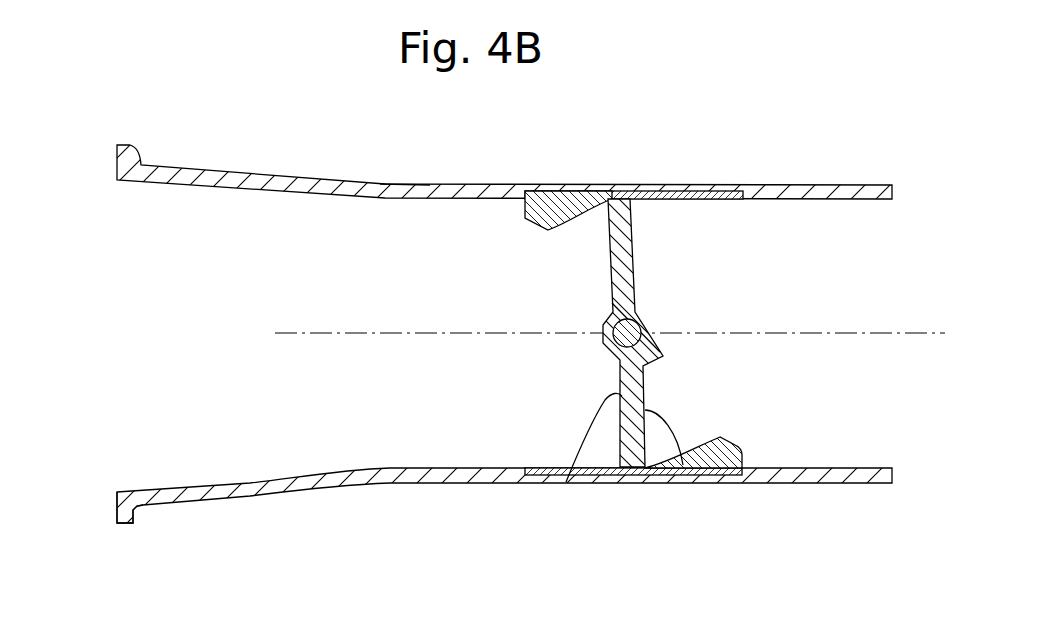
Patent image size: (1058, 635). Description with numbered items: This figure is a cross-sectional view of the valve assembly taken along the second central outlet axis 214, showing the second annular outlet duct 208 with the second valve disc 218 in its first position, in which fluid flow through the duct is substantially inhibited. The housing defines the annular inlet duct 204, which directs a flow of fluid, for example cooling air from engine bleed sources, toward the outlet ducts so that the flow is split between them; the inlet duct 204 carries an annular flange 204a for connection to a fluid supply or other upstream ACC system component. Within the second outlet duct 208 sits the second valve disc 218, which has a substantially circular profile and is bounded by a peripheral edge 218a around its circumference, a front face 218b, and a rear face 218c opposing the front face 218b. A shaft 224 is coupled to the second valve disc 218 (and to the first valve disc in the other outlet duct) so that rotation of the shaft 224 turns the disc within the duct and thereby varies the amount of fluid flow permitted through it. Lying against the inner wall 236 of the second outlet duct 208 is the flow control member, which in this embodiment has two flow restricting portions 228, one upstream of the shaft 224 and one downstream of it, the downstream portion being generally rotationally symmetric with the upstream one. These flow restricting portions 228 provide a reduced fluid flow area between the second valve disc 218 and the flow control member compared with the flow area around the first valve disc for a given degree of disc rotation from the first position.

The annular inlet duct 204 is at (467, 353).
The annular flange 204a is at (128, 515).
The second annular outlet duct 208 is at (752, 192).
The second central outlet axis 214 is at (925, 332).
The second valve disc 218 is at (622, 238).
The peripheral edge 218a is at (623, 201).
The front face 218b is at (566, 482).
The rear face 218c is at (683, 465).
The shaft 224 is at (634, 328).
The flow restricting portion 228 is at (542, 205).
The inner wall 236 is at (430, 200).